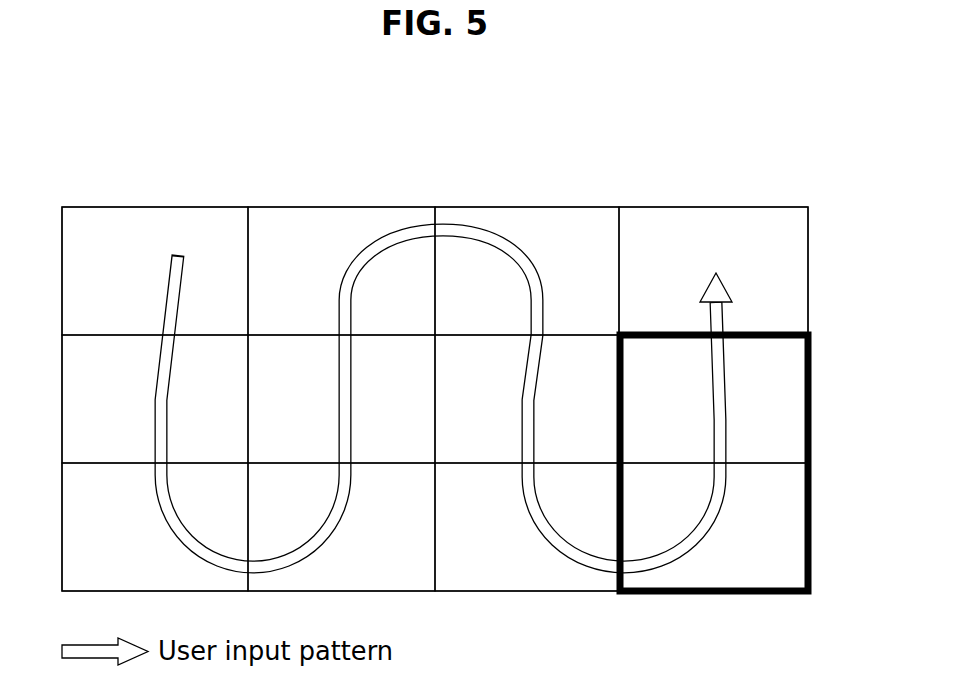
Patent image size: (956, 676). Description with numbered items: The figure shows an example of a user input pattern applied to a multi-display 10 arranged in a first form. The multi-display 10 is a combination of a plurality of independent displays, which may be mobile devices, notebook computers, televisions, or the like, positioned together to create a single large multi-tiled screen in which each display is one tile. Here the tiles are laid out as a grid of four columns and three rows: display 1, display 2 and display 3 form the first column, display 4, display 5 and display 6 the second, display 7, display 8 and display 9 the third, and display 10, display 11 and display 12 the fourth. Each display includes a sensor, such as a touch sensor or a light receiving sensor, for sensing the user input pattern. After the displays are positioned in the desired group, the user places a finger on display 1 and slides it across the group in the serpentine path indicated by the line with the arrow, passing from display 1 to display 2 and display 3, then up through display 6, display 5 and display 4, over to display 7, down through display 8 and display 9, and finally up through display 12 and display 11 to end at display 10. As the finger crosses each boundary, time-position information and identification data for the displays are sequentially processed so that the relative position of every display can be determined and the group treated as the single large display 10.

The multi-display 10 is at (577, 177).
The display # 1 is at (155, 270).
The display # 2 is at (155, 399).
The display # 3 is at (155, 526).
The display # 4 is at (341, 270).
The display # 5 is at (341, 399).
The display # 6 is at (341, 526).
The display # 7 is at (527, 270).
The display # 8 is at (527, 398).
The display # 9 is at (527, 526).
The display # 11 is at (713, 399).
The display # 12 is at (713, 527).